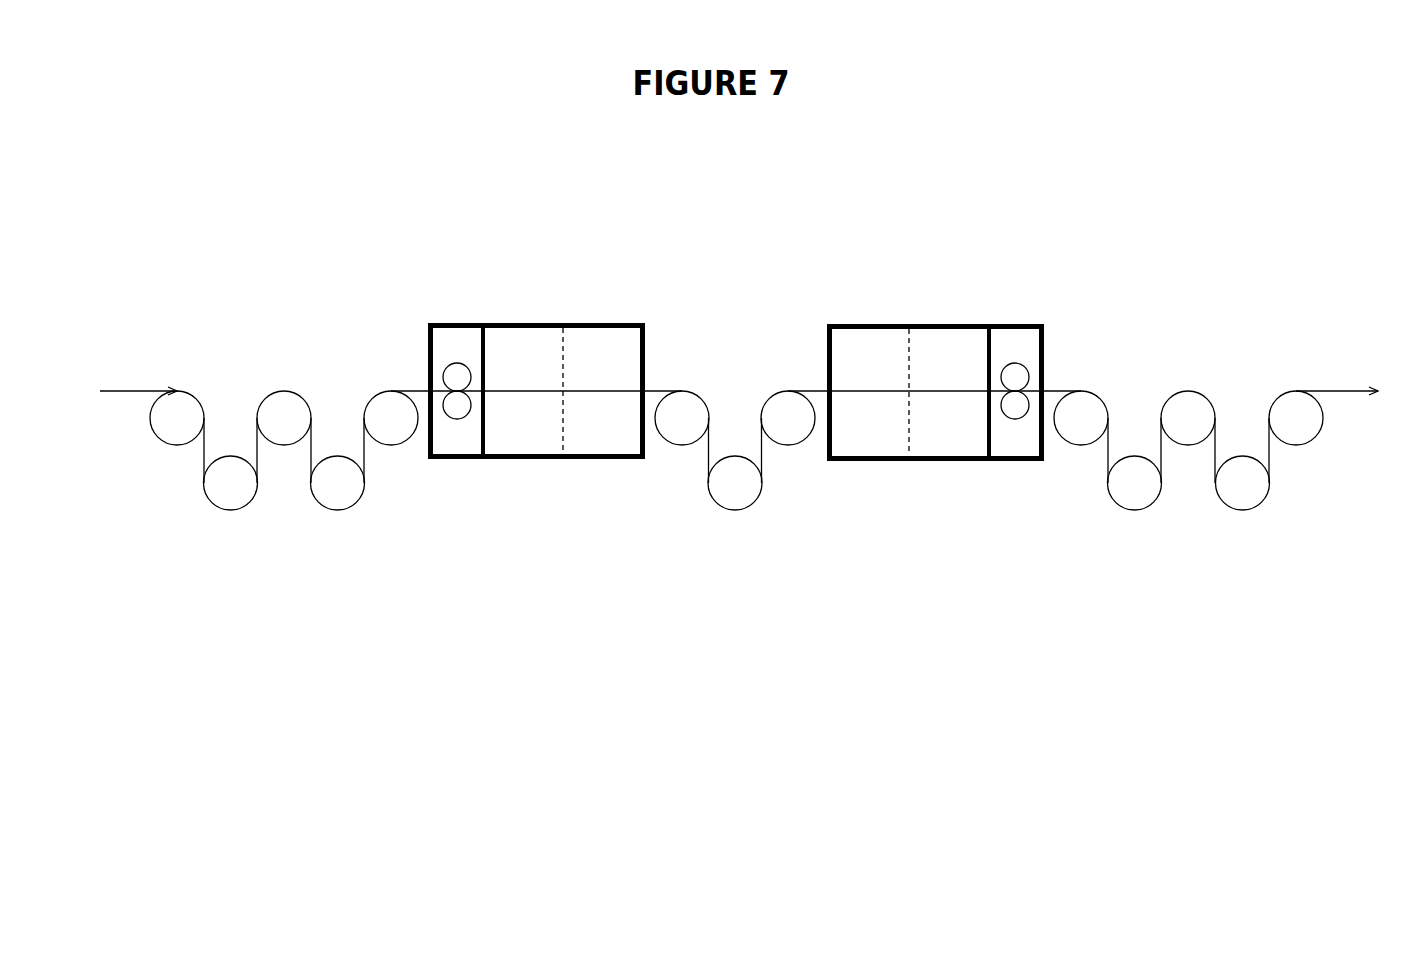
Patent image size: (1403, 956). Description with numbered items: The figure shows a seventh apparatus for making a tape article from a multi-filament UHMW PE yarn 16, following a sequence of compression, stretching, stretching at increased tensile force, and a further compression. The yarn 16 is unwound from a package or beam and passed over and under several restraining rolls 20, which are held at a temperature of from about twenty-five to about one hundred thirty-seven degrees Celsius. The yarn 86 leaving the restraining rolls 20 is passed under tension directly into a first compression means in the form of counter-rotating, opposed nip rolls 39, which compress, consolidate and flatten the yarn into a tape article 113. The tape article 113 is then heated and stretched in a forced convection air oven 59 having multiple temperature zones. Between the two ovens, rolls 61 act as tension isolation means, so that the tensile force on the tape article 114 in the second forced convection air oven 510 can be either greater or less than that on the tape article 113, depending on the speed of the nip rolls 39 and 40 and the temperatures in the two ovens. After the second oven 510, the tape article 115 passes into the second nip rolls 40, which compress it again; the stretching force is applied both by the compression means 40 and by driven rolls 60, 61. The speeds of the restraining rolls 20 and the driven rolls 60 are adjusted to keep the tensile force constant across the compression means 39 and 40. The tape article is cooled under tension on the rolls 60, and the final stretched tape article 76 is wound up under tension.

The multi-filament UHMW PE yarn 16 is at (131, 391).
The restraining rolls 20 is at (370, 398).
The yarn leaving the restraining rolls 86 is at (409, 388).
The tape article 113 is at (542, 391).
The forced convection air oven 59 is at (602, 324).
The nip rolls 39 is at (457, 419).
The rolls 61 is at (682, 446).
The forced convection air oven 510 is at (848, 324).
The tape article 114 is at (955, 391).
The web 115 is at (1053, 391).
The nip rolls 40 is at (1015, 419).
The driven rolls 60 is at (1290, 397).
The final stretched tape article 76 is at (1345, 391).